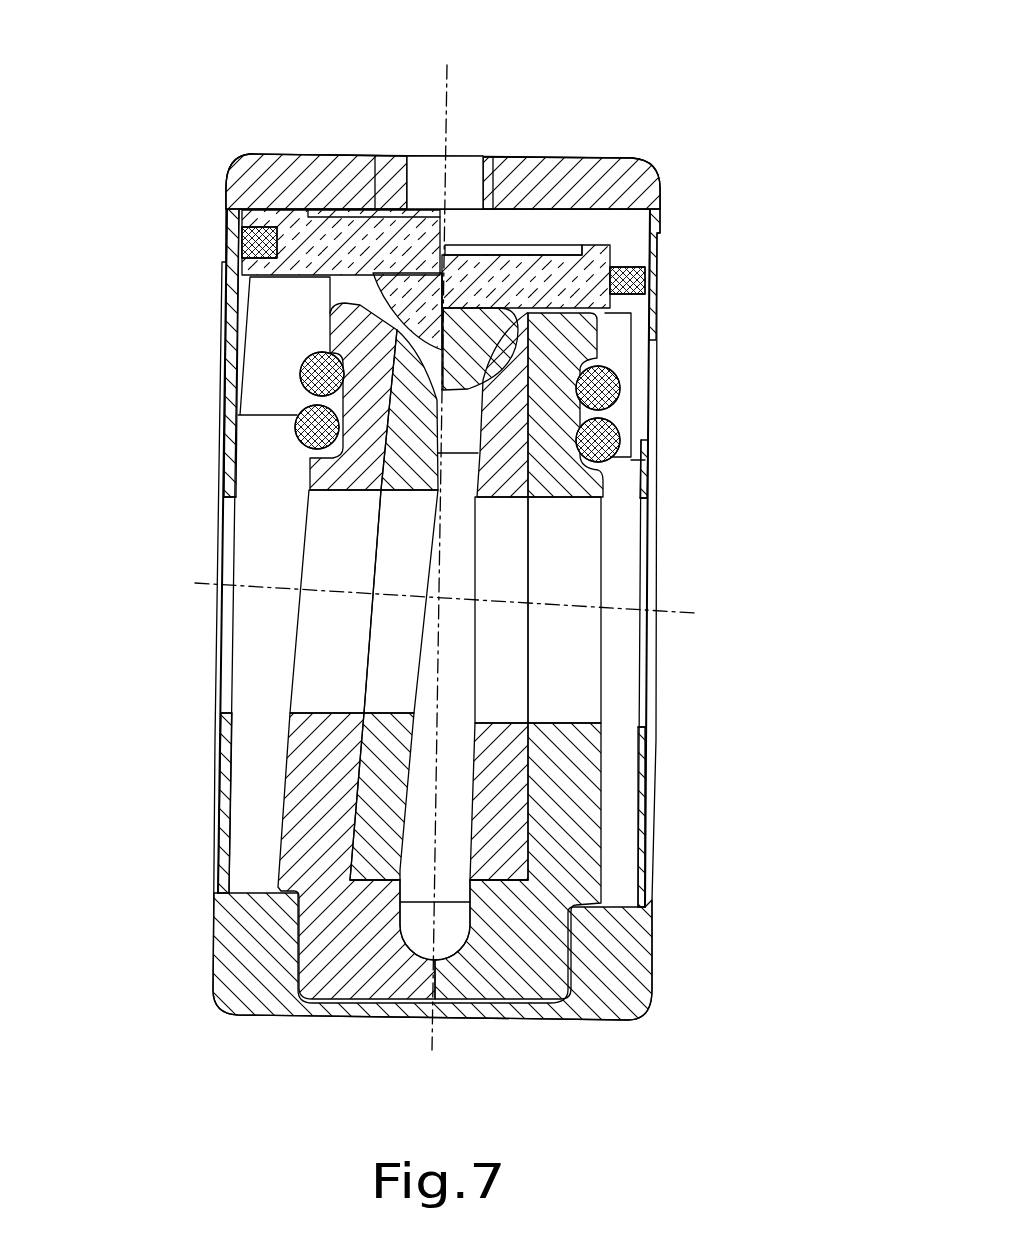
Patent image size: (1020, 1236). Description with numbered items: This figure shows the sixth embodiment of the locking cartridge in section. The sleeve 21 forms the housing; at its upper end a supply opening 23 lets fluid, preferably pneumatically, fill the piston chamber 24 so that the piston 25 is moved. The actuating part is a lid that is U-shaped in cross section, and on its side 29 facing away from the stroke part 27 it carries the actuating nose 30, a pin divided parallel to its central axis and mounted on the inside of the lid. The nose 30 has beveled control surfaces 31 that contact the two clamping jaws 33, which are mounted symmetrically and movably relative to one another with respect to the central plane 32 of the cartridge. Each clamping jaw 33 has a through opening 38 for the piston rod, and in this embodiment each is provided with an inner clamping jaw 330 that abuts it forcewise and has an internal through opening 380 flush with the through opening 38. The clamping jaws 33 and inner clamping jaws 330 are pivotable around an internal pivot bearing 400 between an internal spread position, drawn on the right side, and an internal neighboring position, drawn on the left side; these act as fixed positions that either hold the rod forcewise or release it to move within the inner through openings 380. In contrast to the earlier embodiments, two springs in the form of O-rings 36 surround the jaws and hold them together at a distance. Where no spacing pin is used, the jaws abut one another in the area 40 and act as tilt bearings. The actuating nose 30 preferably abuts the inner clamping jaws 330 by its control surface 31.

The sleeve 21 is at (258, 178).
The supply opening 23 is at (462, 178).
The piston chamber 24 is at (600, 227).
The piston 25 is at (550, 225).
The stroke part 27 is at (247, 288).
The side 29 is at (325, 280).
The actuating nose 30 is at (400, 300).
The control surface 31 is at (396, 335).
The central plane 32 is at (441, 117).
The clamping jaw 33 is at (313, 742).
The O-ring 36 is at (307, 432).
The through opening 38 is at (320, 630).
The area 40 is at (426, 966).
The inner clamping jaw 330 is at (408, 457).
The internal through opening 380 is at (395, 670).
The internal pivot bearing 400 is at (396, 892).